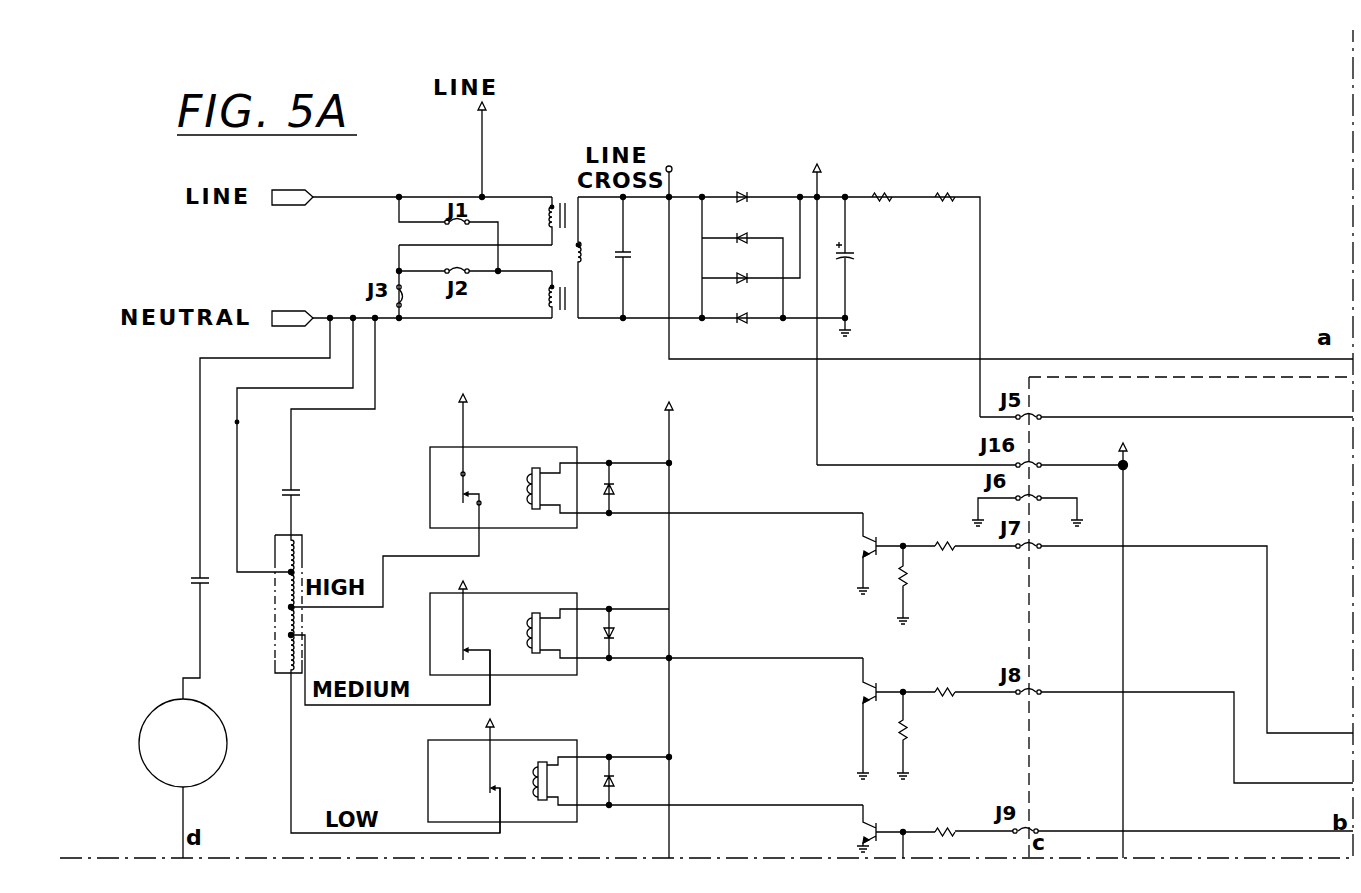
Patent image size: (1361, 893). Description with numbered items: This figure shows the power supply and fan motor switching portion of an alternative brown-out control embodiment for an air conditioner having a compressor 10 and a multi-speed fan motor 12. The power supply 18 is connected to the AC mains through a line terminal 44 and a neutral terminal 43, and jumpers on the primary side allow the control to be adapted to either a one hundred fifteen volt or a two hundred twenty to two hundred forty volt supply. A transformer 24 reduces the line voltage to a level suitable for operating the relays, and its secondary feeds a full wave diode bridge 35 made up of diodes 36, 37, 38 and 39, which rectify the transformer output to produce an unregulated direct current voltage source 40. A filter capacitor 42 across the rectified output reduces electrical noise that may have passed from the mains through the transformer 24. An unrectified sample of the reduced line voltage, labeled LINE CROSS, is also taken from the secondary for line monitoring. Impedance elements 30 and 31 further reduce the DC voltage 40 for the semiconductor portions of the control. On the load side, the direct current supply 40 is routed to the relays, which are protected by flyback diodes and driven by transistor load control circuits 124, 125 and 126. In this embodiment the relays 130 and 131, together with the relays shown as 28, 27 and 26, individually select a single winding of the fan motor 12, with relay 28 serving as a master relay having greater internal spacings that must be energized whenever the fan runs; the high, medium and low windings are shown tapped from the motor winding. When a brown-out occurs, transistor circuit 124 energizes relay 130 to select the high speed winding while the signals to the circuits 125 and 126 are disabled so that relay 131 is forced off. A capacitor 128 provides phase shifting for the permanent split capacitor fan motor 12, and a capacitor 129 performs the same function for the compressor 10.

The compressor 10 is at (158, 786).
The fan motor 12 is at (273, 634).
The power supply 18 is at (685, 93).
The transformer 24 is at (563, 197).
The relay 26 is at (528, 740).
The relay 27 is at (551, 588).
The relay 28 is at (429, 471).
The impedance element 30 is at (877, 193).
The impedance element 31 is at (935, 191).
The full wave diode bridge 35 is at (751, 202).
The diode 36 is at (763, 160).
The diode 37 is at (746, 222).
The diode 38 is at (744, 277).
The diode 39 is at (744, 317).
The direct current voltage source 40 is at (878, 150).
The filter capacitor 42 is at (857, 258).
The neutral terminal 43 is at (286, 311).
The line terminal 44 is at (287, 190).
The load control circuit 124 is at (836, 559).
The load control circuit 125 is at (844, 702).
The load control circuit 126 is at (839, 835).
The capacitor 128 is at (302, 494).
The capacitor 129 is at (190, 585).
The relay 130 is at (638, 446).
The relay 131 is at (645, 625).